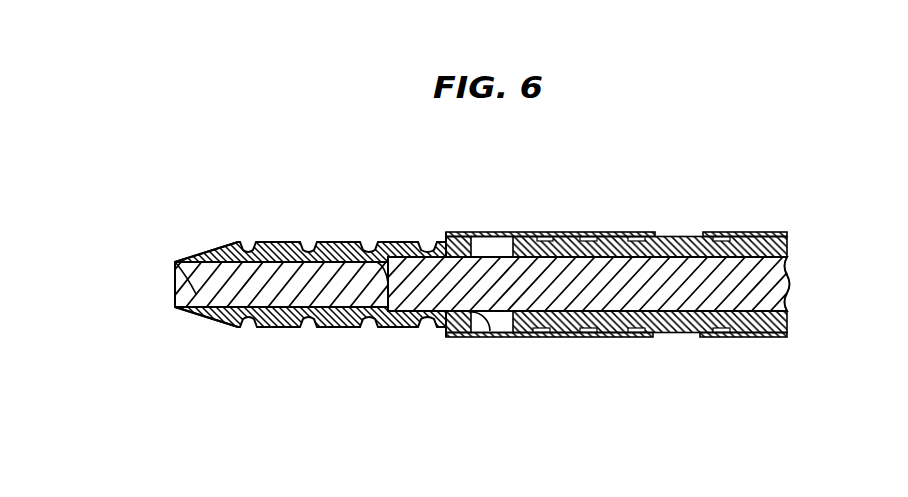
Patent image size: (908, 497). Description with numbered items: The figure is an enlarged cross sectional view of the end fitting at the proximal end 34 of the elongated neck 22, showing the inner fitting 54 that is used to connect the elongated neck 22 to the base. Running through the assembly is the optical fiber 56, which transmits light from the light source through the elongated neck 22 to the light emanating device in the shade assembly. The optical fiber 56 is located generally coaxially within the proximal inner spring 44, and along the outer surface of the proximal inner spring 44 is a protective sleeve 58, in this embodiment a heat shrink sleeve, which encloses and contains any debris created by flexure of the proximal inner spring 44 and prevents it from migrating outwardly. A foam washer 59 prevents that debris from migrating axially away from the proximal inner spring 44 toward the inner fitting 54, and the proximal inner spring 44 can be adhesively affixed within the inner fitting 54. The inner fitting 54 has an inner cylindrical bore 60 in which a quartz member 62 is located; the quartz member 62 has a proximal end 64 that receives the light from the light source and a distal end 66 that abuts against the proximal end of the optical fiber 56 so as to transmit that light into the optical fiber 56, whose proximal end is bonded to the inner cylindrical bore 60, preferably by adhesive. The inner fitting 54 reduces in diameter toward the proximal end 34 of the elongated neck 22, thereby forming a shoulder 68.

The elongated neck 22 is at (192, 155).
The inner fitting 54 is at (333, 242).
The quartz member 62 is at (177, 258).
The proximal end 64 is at (170, 298).
The proximal end 34 is at (203, 323).
The inner cylindrical bore 60 is at (330, 308).
The distal end 66 is at (390, 242).
The shoulder 68 is at (437, 233).
The protective sleeve 58 is at (577, 232).
The optical fiber 56 is at (790, 288).
The foam washer 59 is at (490, 332).
The proximal inner spring 44 is at (678, 331).